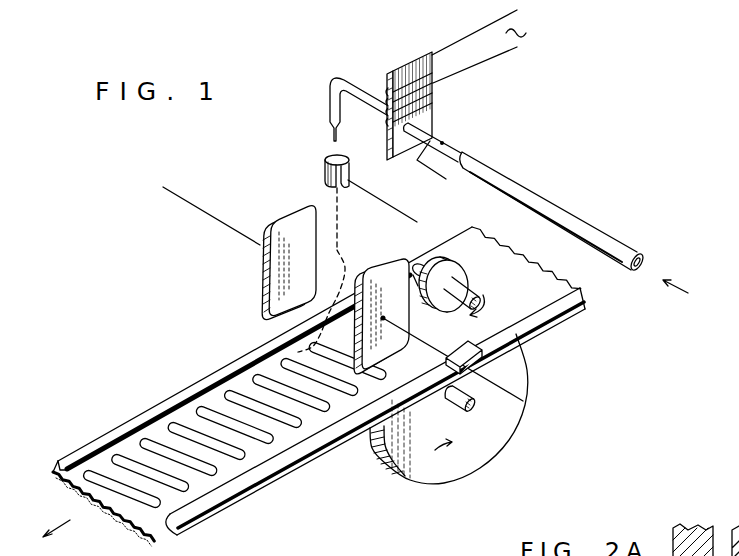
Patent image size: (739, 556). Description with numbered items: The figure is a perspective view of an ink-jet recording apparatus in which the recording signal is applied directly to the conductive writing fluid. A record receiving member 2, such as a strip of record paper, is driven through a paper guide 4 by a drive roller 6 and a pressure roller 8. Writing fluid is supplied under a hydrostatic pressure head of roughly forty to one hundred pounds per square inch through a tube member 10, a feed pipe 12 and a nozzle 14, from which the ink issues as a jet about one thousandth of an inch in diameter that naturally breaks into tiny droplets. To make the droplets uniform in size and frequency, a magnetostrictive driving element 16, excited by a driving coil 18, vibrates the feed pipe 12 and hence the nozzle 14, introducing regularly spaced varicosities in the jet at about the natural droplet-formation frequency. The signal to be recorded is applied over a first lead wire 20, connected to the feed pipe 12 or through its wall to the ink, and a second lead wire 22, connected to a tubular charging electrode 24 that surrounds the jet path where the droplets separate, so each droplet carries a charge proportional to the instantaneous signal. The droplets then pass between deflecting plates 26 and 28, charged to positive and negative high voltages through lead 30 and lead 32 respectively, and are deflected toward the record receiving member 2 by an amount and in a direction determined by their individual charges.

The record receiving member 2 is at (70, 482).
The paper guide 4 is at (142, 414).
The drive roller 6 is at (458, 450).
The pressure roller 8 is at (446, 275).
The tube member 10 is at (543, 205).
The feed pipe 12 is at (455, 147).
The nozzle 14 is at (330, 128).
The magnetostrictive driving element 16 is at (420, 115).
The driving coil 18 is at (433, 78).
The first lead wire 20 is at (424, 180).
The second lead wire 22 is at (366, 190).
The charging electrode 24 is at (323, 162).
The deflecting plate 26 is at (283, 265).
The deflecting plate 28 is at (385, 287).
The lead 30 is at (197, 204).
The lead 32 is at (494, 380).